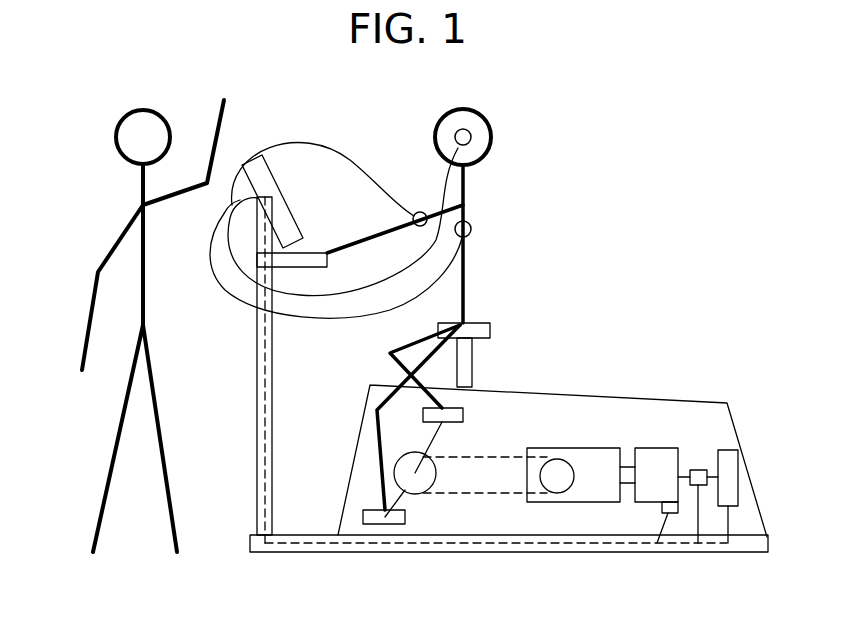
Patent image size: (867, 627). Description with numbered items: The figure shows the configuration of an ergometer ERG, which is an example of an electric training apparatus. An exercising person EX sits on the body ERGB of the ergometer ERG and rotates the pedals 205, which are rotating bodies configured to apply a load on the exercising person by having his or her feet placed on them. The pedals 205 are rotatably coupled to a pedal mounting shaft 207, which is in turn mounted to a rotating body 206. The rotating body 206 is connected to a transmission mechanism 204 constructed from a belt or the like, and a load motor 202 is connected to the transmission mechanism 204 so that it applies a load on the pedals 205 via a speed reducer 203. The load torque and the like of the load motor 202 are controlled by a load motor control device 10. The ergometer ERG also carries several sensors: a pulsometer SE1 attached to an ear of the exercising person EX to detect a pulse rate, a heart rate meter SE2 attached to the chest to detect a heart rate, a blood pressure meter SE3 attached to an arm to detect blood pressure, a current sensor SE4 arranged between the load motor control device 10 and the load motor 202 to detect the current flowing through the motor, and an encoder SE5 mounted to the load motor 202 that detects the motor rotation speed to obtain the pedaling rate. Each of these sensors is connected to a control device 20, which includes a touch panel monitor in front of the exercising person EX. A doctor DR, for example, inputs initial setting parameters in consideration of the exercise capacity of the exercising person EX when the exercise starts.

The doctor DR is at (140, 191).
The control device 20 is at (276, 177).
The exercising person EX is at (467, 188).
The pulsometer SE1 is at (471, 131).
The heart rate meter SE2 is at (471, 232).
The blood pressure meter SE3 is at (415, 212).
The current sensor SE4 is at (700, 470).
The encoder SE5 is at (670, 513).
The ergometer ERG is at (712, 233).
The body ERGB is at (737, 437).
The pedals 205 is at (463, 414).
The rotating body 206 is at (437, 482).
The pedal mounting shaft 207 is at (398, 500).
The transmission mechanism 204 is at (490, 456).
The speed reducer 203 is at (597, 448).
The load motor 202 is at (655, 448).
The load motor control device 10 is at (738, 477).